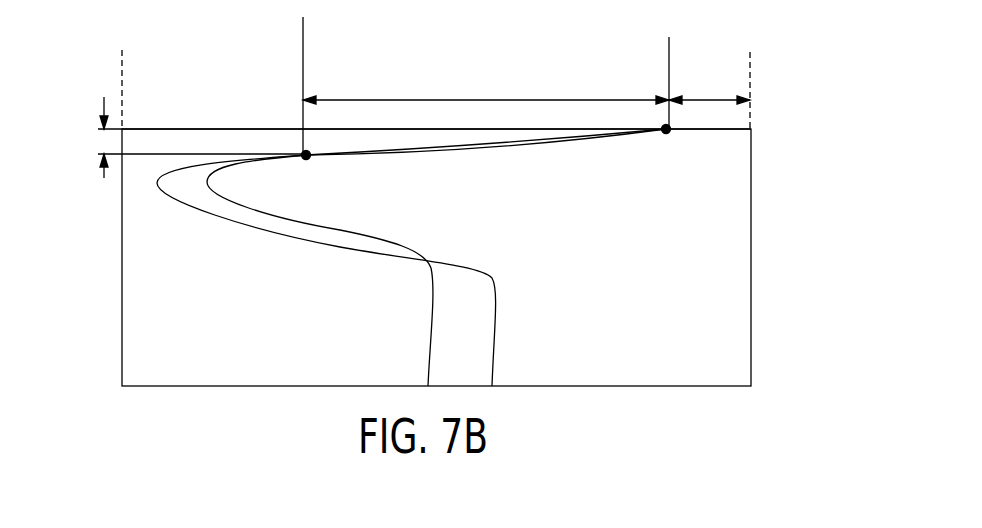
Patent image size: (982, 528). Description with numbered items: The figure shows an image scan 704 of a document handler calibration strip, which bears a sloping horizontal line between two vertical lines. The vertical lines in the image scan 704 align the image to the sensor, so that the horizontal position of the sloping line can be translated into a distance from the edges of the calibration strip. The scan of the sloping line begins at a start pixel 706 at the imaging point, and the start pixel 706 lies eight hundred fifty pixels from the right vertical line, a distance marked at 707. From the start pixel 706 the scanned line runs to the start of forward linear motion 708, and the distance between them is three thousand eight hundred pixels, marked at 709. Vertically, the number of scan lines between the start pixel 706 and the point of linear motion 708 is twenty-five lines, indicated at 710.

The image scan 704 is at (160, 128).
The start pixel 706 is at (670, 132).
The distance from start pixel to right vertical line 707 is at (705, 98).
The start of forward linear motion 708 is at (310, 158).
The distance from start pixel to start of forward linear motion 709 is at (516, 100).
The number of scan lines 710 is at (104, 180).